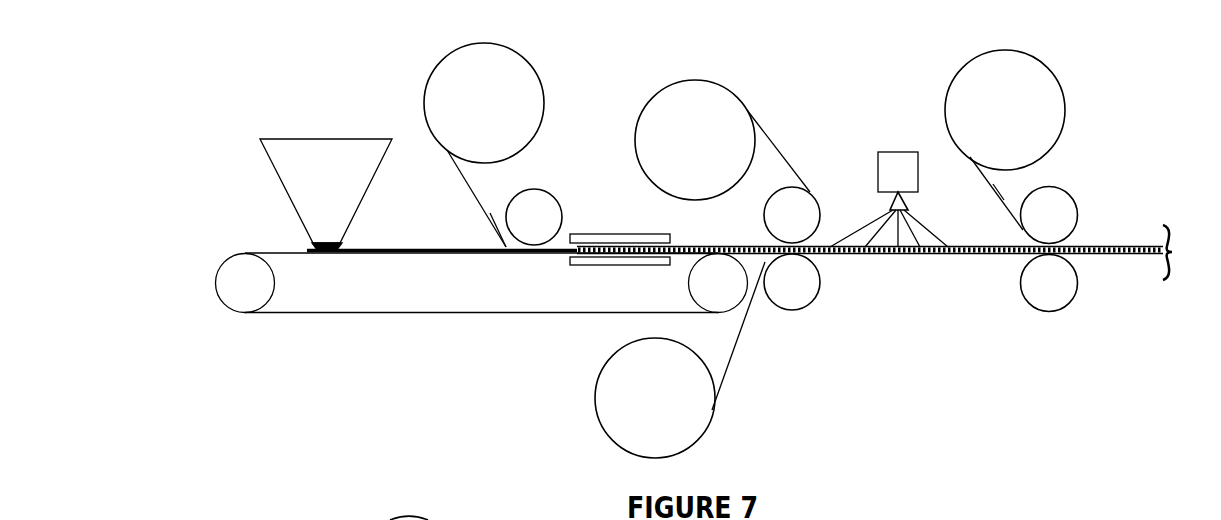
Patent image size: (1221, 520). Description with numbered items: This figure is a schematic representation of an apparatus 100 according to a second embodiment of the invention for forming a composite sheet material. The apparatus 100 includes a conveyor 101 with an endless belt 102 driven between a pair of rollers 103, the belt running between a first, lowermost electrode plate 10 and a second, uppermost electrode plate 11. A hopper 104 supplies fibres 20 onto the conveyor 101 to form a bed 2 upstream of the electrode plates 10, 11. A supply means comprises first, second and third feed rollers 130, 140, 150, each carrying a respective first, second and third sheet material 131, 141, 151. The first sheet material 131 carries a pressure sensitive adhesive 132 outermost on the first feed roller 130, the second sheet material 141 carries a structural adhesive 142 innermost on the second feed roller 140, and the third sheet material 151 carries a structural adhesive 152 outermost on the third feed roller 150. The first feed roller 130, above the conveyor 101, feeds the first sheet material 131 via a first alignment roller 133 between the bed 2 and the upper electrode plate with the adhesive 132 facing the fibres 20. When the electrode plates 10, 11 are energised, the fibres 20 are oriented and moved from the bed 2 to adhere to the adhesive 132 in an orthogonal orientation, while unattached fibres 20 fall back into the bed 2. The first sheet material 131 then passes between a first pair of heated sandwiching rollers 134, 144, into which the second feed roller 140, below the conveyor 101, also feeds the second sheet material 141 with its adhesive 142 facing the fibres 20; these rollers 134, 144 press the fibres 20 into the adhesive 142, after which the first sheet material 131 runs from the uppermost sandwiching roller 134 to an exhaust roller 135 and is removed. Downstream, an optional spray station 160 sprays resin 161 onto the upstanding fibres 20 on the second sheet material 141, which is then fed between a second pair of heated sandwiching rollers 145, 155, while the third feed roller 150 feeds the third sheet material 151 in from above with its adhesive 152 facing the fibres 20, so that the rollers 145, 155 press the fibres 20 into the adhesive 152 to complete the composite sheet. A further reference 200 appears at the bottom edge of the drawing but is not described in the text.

The apparatus 100 is at (170, 89).
The conveyor 101 is at (297, 367).
The endless belt 102 is at (470, 318).
The rollers 103 is at (225, 290).
The hopper 104 is at (352, 199).
The bed 2 is at (400, 249).
The first, lowermost electrode plate 10 is at (598, 265).
The second, uppermost electrode plate 11 is at (637, 233).
The fibres 20 is at (1003, 244).
The first feed roller 130 is at (508, 116).
The first sheet material 131 is at (480, 184).
The pressure sensitive adhesive 132 is at (490, 213).
The first alignment roller 133 is at (558, 227).
The uppermost sandwiching roller 134 is at (816, 227).
The exhaust roller 135 is at (719, 157).
The second feed roller 140 is at (679, 416).
The second sheet material 141 is at (742, 338).
The structural adhesive 142 is at (740, 316).
The sandwiching roller 144 is at (816, 294).
The sandwiching roller 145 is at (1068, 283).
The third feed roller 150 is at (1029, 122).
The third sheet material 151 is at (1000, 187).
The structural adhesive 152 is at (993, 184).
The sandwiching roller 155 is at (1068, 212).
The spray station 160 is at (898, 152).
The resin 161 is at (867, 223).
The system 200 is at (215, 507).